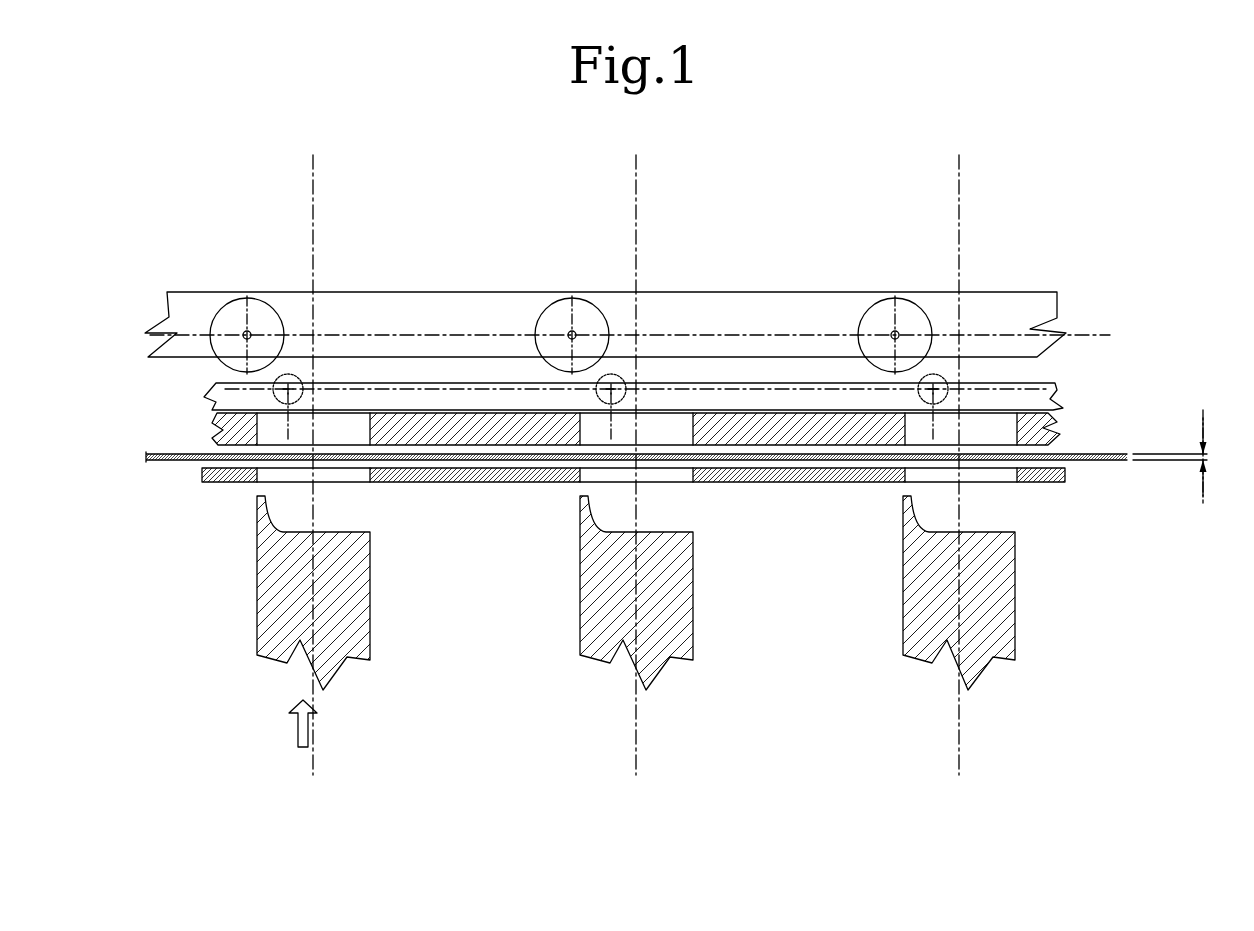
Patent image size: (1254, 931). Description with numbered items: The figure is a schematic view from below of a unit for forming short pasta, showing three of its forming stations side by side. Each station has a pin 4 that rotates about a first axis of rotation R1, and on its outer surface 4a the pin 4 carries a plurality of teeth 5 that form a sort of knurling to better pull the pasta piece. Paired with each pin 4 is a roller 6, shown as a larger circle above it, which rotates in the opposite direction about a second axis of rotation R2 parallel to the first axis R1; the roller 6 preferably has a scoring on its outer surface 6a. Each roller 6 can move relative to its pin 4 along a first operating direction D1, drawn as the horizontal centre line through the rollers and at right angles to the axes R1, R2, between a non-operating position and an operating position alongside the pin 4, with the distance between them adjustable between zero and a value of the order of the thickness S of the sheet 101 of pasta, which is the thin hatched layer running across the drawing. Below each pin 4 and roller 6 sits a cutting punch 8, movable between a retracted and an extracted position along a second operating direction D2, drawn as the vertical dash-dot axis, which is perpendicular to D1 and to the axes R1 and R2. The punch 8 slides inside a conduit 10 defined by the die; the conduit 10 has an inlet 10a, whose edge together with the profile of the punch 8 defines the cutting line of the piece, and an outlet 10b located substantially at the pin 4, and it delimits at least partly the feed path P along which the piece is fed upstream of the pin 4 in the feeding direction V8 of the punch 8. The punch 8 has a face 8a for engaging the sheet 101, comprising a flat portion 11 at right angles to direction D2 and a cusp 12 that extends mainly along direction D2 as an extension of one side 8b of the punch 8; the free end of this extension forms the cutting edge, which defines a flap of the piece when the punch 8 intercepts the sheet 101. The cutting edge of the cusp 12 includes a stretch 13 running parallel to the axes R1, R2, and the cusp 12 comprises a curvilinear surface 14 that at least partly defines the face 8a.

The pin 4 is at (303, 372).
The outer surface 4a is at (950, 391).
The teeth 5 is at (627, 375).
The roller 6 is at (221, 298).
The outer surface 6a is at (250, 334).
The cutting punch 8 is at (262, 645).
The face 8a is at (653, 518).
The side 8b is at (257, 607).
The conduit 10 is at (266, 433).
The inlet 10a is at (274, 448).
The outlet 10b is at (910, 422).
The flat portion 11 is at (356, 531).
The cusp 12 is at (258, 523).
The stretch 13 is at (259, 497).
The curvilinear surface 14 is at (283, 522).
The sheet 101 is at (1113, 467).
The path P is at (265, 421).
The thickness S is at (1204, 420).
The first axis of rotation R1 is at (303, 373).
The second axis of rotation R2 is at (289, 366).
The first operating direction D1 is at (1073, 335).
The second operating direction D2 is at (636, 229).
The feeding direction V8 is at (297, 736).